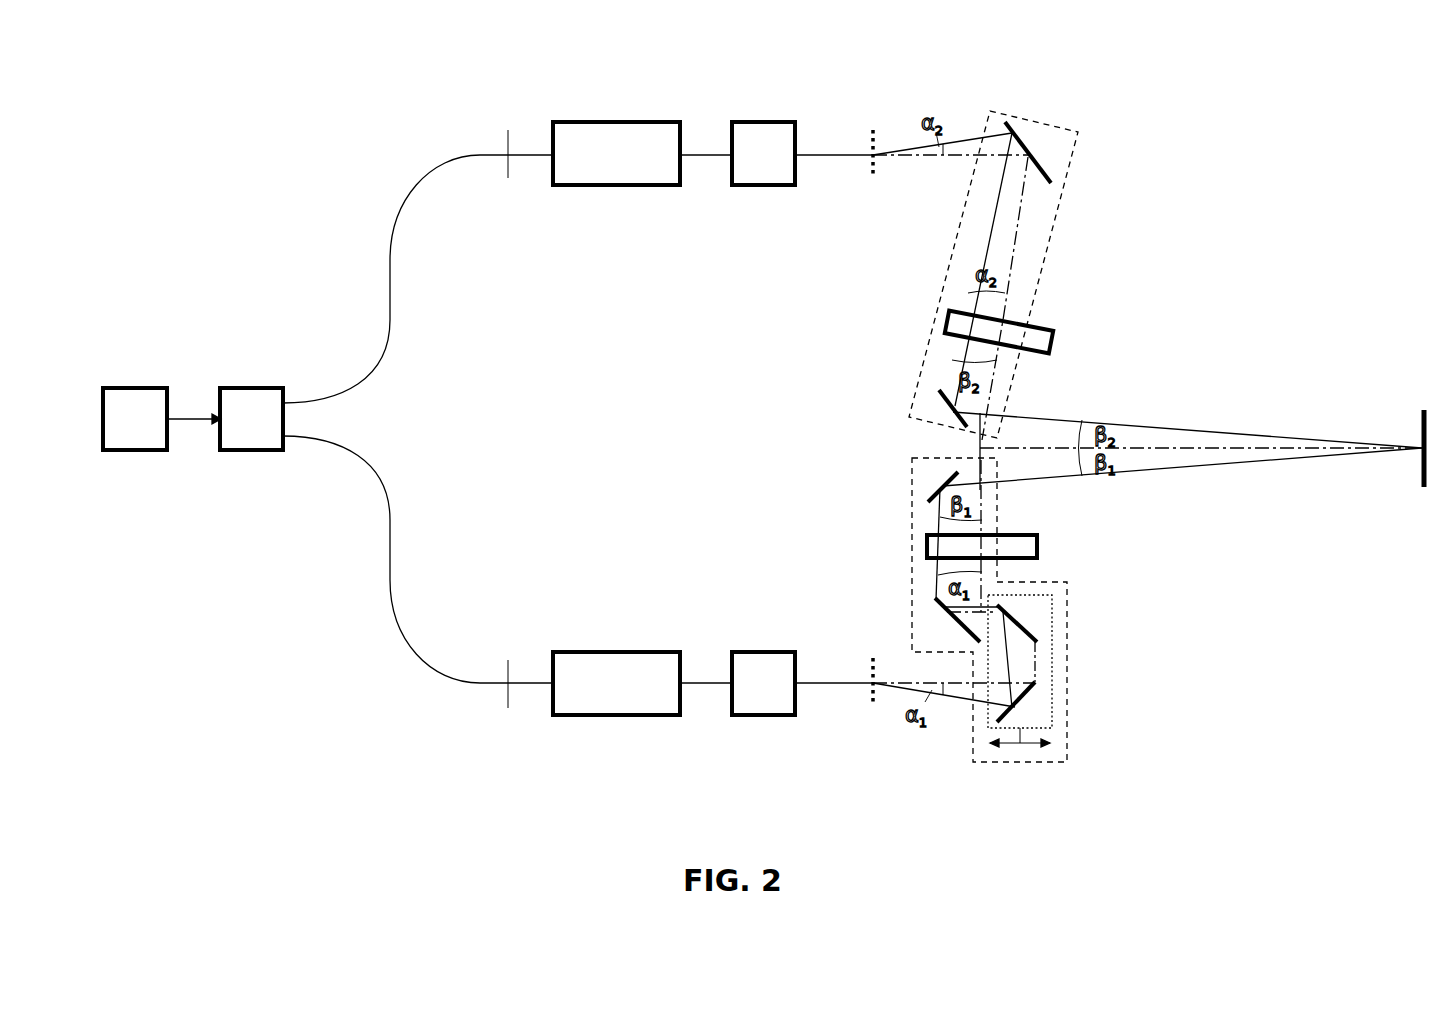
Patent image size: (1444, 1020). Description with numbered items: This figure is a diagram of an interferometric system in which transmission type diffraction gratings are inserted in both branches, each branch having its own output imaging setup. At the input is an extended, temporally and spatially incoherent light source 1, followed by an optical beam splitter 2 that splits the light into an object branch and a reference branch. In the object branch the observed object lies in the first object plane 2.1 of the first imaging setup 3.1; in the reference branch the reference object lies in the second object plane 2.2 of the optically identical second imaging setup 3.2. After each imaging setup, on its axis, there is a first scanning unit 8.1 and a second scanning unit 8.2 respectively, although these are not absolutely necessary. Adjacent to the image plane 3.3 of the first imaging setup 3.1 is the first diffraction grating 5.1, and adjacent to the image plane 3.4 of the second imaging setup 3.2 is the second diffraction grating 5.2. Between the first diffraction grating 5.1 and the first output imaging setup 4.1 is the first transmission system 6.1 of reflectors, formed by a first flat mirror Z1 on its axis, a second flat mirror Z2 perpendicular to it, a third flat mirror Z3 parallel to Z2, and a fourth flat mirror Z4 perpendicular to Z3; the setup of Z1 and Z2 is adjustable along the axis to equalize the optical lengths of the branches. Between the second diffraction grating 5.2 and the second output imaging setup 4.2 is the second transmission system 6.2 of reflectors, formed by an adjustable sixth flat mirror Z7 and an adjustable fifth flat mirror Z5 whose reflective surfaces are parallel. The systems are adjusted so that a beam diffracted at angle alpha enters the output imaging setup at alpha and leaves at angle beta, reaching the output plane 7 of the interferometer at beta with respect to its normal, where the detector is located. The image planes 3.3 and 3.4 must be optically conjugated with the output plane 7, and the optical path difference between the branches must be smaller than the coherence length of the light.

The light source 1 is at (118, 386).
The optical beam splitter 2 is at (237, 386).
The first object plane 2.1 is at (509, 710).
The second object plane 2.2 is at (509, 128).
The first imaging setup 3.1 is at (609, 716).
The second imaging setup 3.2 is at (609, 121).
The image plane of the first imaging setup 3.3 is at (878, 710).
The image plane of the second imaging setup 3.4 is at (878, 130).
The first output imaging setup 4.1 is at (1040, 549).
The second output imaging setup 4.2 is at (1056, 340).
The first diffraction grating 5.1 is at (868, 700).
The second diffraction grating 5.2 is at (868, 142).
The first transmission system of reflectors 6.1 is at (1070, 604).
The second transmission system of reflectors 6.2 is at (1042, 265).
The output plane 7 is at (1422, 408).
The first scanning unit 8.1 is at (757, 716).
The second scanning unit 8.2 is at (757, 121).
The first flat mirror Z1 is at (1025, 700).
The second flat mirror Z2 is at (1025, 627).
The third flat mirror Z3 is at (938, 608).
The fourth flat mirror Z4 is at (930, 490).
The fifth flat mirror Z5 is at (940, 396).
The sixth flat mirror Z7 is at (1048, 174).